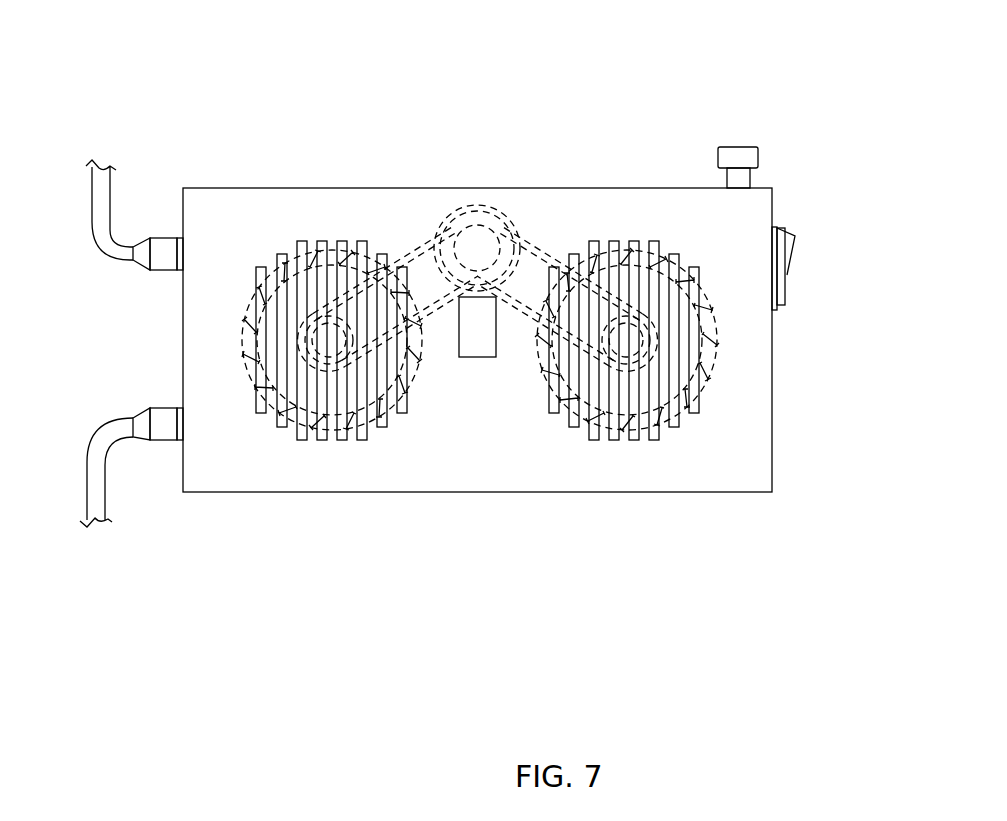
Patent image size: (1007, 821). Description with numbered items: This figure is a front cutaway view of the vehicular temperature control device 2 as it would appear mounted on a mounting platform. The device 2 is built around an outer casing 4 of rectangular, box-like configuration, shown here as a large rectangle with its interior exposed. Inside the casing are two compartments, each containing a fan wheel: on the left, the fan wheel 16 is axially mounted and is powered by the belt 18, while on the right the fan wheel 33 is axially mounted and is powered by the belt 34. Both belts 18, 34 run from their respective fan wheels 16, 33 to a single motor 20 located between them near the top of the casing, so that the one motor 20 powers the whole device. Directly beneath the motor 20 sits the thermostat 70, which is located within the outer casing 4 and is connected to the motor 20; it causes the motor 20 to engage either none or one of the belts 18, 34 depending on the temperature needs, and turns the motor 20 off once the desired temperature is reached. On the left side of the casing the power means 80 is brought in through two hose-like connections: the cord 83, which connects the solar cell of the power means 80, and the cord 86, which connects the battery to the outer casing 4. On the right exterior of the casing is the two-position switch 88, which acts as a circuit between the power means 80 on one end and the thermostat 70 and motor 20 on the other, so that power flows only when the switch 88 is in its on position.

The vehicular temperature control device 2 is at (349, 104).
The outer casing 4 is at (252, 188).
The fan wheel 16 is at (350, 433).
The belt 18 is at (411, 245).
The motor 20 is at (492, 205).
The fan wheel 33 is at (655, 432).
The belt 34 is at (542, 240).
The thermostat 70 is at (477, 358).
The power means 80 is at (108, 185).
The cord 83 is at (114, 261).
The cord 86 is at (120, 422).
The two-position switch 88 is at (785, 248).